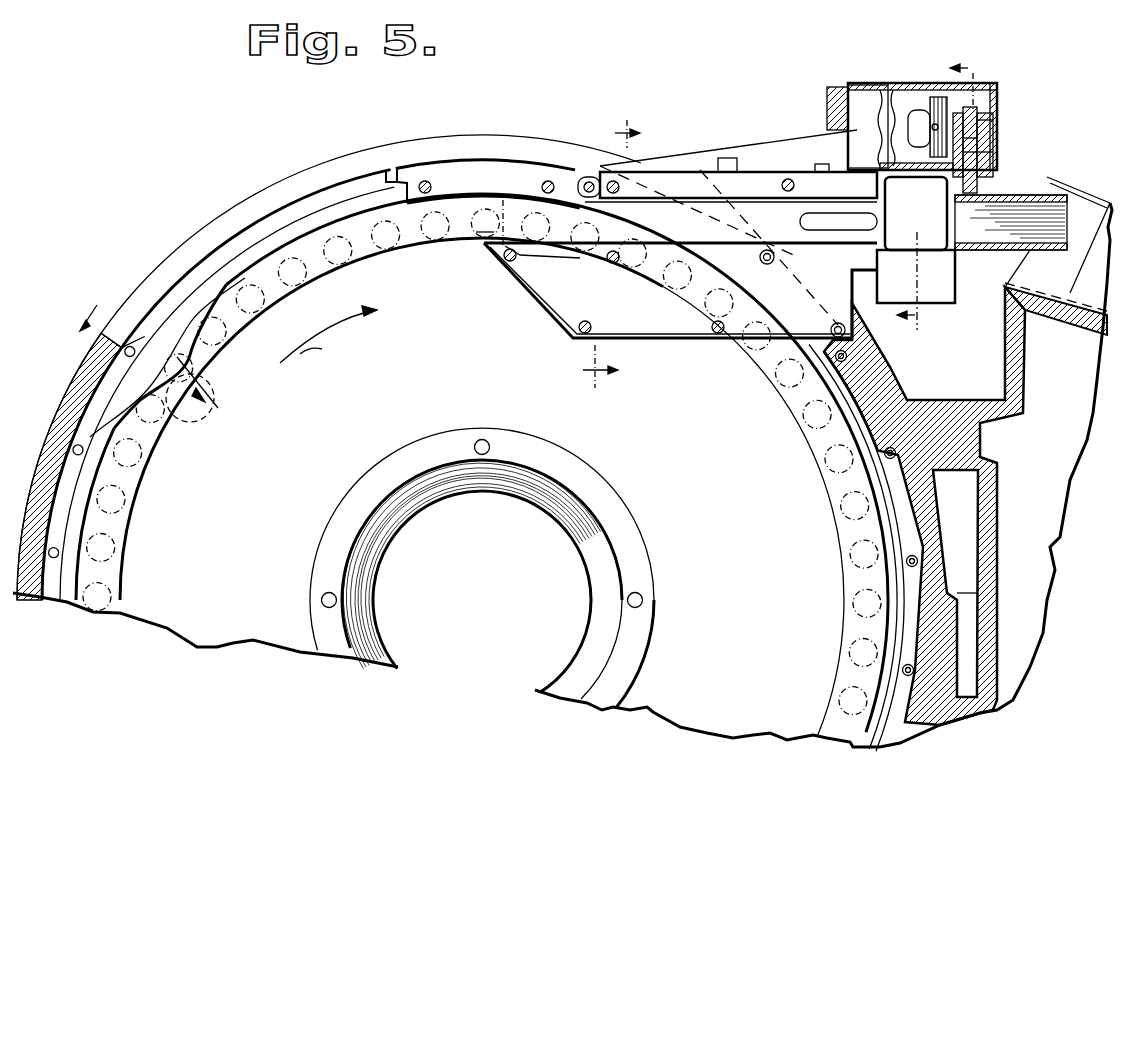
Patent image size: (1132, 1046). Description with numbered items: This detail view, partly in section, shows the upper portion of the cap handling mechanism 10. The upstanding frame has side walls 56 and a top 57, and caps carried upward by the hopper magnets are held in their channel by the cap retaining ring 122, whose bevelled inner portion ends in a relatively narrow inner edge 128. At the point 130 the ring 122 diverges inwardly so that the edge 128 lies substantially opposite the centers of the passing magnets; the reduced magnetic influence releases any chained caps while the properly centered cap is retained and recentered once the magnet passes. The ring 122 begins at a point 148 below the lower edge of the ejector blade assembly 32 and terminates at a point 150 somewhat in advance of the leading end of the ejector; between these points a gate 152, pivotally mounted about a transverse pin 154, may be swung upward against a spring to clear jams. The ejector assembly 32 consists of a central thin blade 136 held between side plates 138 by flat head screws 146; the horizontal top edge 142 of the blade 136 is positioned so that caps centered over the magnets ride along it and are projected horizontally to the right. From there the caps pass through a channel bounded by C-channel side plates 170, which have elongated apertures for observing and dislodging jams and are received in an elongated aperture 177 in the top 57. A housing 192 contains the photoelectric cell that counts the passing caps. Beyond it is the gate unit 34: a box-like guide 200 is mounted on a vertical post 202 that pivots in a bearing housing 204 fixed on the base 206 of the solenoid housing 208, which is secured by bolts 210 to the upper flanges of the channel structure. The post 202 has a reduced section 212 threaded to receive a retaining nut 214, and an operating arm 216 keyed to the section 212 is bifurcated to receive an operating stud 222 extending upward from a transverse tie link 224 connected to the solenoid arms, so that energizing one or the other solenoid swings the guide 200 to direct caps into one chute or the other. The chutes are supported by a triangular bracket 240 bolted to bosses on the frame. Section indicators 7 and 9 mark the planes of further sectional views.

The top of framework 57 is at (275, 182).
The cap retaining ring 122 is at (52, 446).
The elongated aperture 177 is at (163, 258).
The termination point of ring 150 is at (382, 174).
The gate 152 is at (470, 172).
The transverse pin 154 is at (588, 178).
The inner edge of ring 128 is at (98, 475).
The inward divergence point 130 is at (190, 372).
The section line 7- 7 is at (146, 364).
The beginning point of ring 148 is at (813, 348).
The handling mechanism 10 is at (611, 261).
The side plate 170 is at (680, 227).
The bolts 210 is at (724, 158).
The ejector blade assembly 32 is at (560, 312).
The top edge of blade 142 is at (483, 237).
The flat head screws 146 is at (520, 258).
The blade 136 is at (505, 284).
The side plate of ejector 138 is at (535, 305).
The photocell housing 192 is at (916, 253).
The section line 9- 9 is at (941, 194).
The triangular bracket 240 is at (995, 356).
The side walls 56 is at (965, 630).
The box-like guide 200 is at (1002, 196).
The gate unit 34 is at (1008, 94).
The base of solenoid housing 206 is at (896, 88).
The transverse tie link 224 is at (912, 110).
The operating stud 222 is at (932, 125).
The solenoid housing 208 is at (940, 98).
The operating arm 216 is at (972, 108).
The retaining nut 214 is at (990, 100).
The reduced section of post 212 is at (990, 118).
The vertical post 202 is at (978, 140).
The bearing housing 204 is at (995, 156).